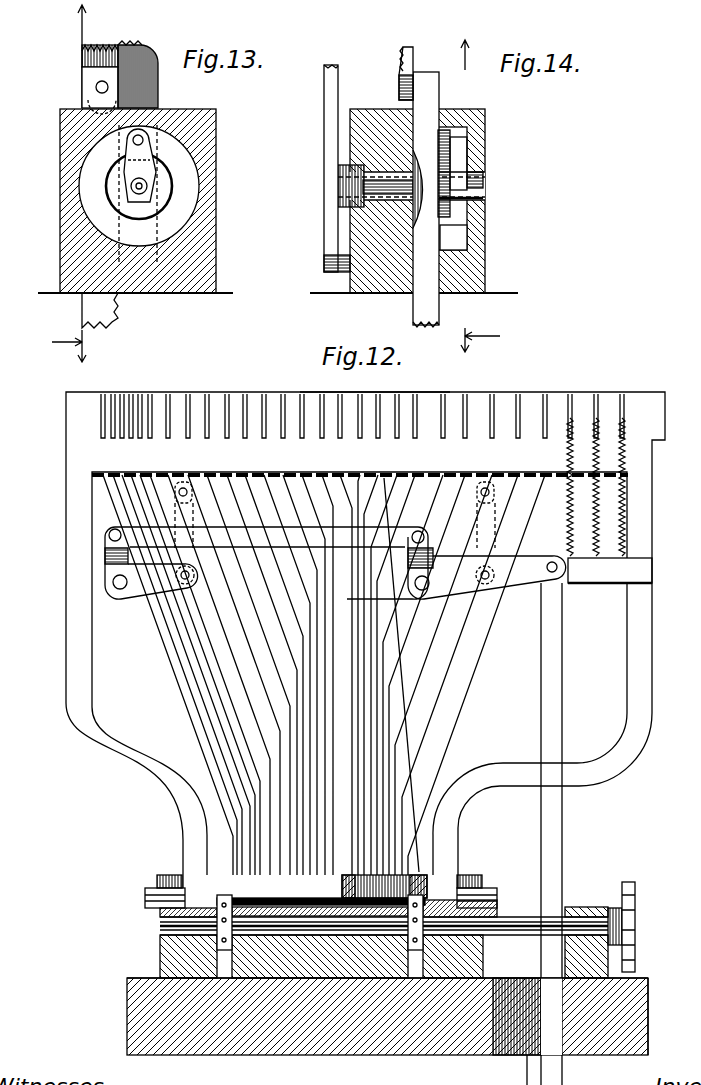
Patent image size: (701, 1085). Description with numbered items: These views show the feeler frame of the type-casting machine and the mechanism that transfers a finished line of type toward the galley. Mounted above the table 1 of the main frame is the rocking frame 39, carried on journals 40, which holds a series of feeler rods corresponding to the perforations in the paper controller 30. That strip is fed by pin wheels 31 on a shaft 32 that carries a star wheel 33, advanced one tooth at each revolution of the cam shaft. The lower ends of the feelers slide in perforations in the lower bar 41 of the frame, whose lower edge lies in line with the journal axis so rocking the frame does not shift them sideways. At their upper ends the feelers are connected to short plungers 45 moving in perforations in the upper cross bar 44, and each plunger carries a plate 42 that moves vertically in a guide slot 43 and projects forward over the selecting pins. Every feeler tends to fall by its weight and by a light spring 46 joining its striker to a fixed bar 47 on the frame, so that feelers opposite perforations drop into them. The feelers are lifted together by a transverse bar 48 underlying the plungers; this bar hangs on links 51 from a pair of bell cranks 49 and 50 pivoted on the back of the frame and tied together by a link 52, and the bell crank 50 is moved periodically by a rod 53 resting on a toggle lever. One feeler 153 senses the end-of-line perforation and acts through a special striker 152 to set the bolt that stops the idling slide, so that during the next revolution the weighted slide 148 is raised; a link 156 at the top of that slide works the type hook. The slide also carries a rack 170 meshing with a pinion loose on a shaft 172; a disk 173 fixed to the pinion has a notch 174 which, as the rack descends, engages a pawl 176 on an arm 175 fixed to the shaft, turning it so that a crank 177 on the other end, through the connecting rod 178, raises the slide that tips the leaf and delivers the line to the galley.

In FIG. 12, the table 1 is at (152, 1017).
In FIG. 12, the perforated paper strip or controller 30 is at (240, 893).
In FIG. 12, the pin wheels 31 is at (430, 946).
In FIG. 12, the shaft 32 is at (165, 924).
In FIG. 12, the star wheel 33 is at (636, 892).
In FIG. 12, the rocking frame 39 is at (615, 770).
In FIG. 12, the journals 40 is at (488, 889).
In FIG. 12, the lower bar 41 is at (357, 886).
In FIG. 12, the plates 42 is at (521, 397).
In FIG. 12, the guide slots 43 is at (463, 438).
In FIG. 12, the upper cross bar 44 is at (360, 434).
In FIG. 12, the plungers 45 is at (519, 472).
In FIG. 12, the spring 46 is at (597, 528).
In FIG. 12, the fixed bar 47 is at (610, 571).
In FIG. 12, the transverse bar 48 is at (324, 675).
In FIG. 12, the bell crank 49 is at (132, 598).
In FIG. 12, the bell crank 50 is at (468, 594).
In FIG. 12, the links 51 is at (497, 548).
In FIG. 12, the link 52 is at (266, 536).
In FIG. 12, the rod 53 is at (562, 719).
In FIG. 13, the weighted slide 148 is at (108, 300).
In FIG. 14, the weighted slide 148 is at (440, 312).
In FIG. 12, the special striker 152 is at (377, 395).
In FIG. 12, the feeler 153 is at (418, 846).
In FIG. 13, the link 156 is at (84, 66).
In FIG. 14, the link 156 is at (406, 64).
In FIG. 13, the rack 170 is at (120, 312).
In FIG. 13, the shaft 172 is at (138, 196).
In FIG. 13, the disk 173 is at (110, 189).
In FIG. 14, the disk 173 is at (455, 222).
In FIG. 13, the notch 174 is at (158, 170).
In FIG. 13, the arm 175 is at (143, 163).
In FIG. 14, the arm 175 is at (458, 152).
In FIG. 13, the pawl 176 is at (160, 150).
In FIG. 14, the pawl 176 is at (445, 130).
In FIG. 14, the crank 177 is at (342, 240).
In FIG. 13, the connecting rod 178 is at (160, 95).
In FIG. 14, the connecting rod 178 is at (324, 166).